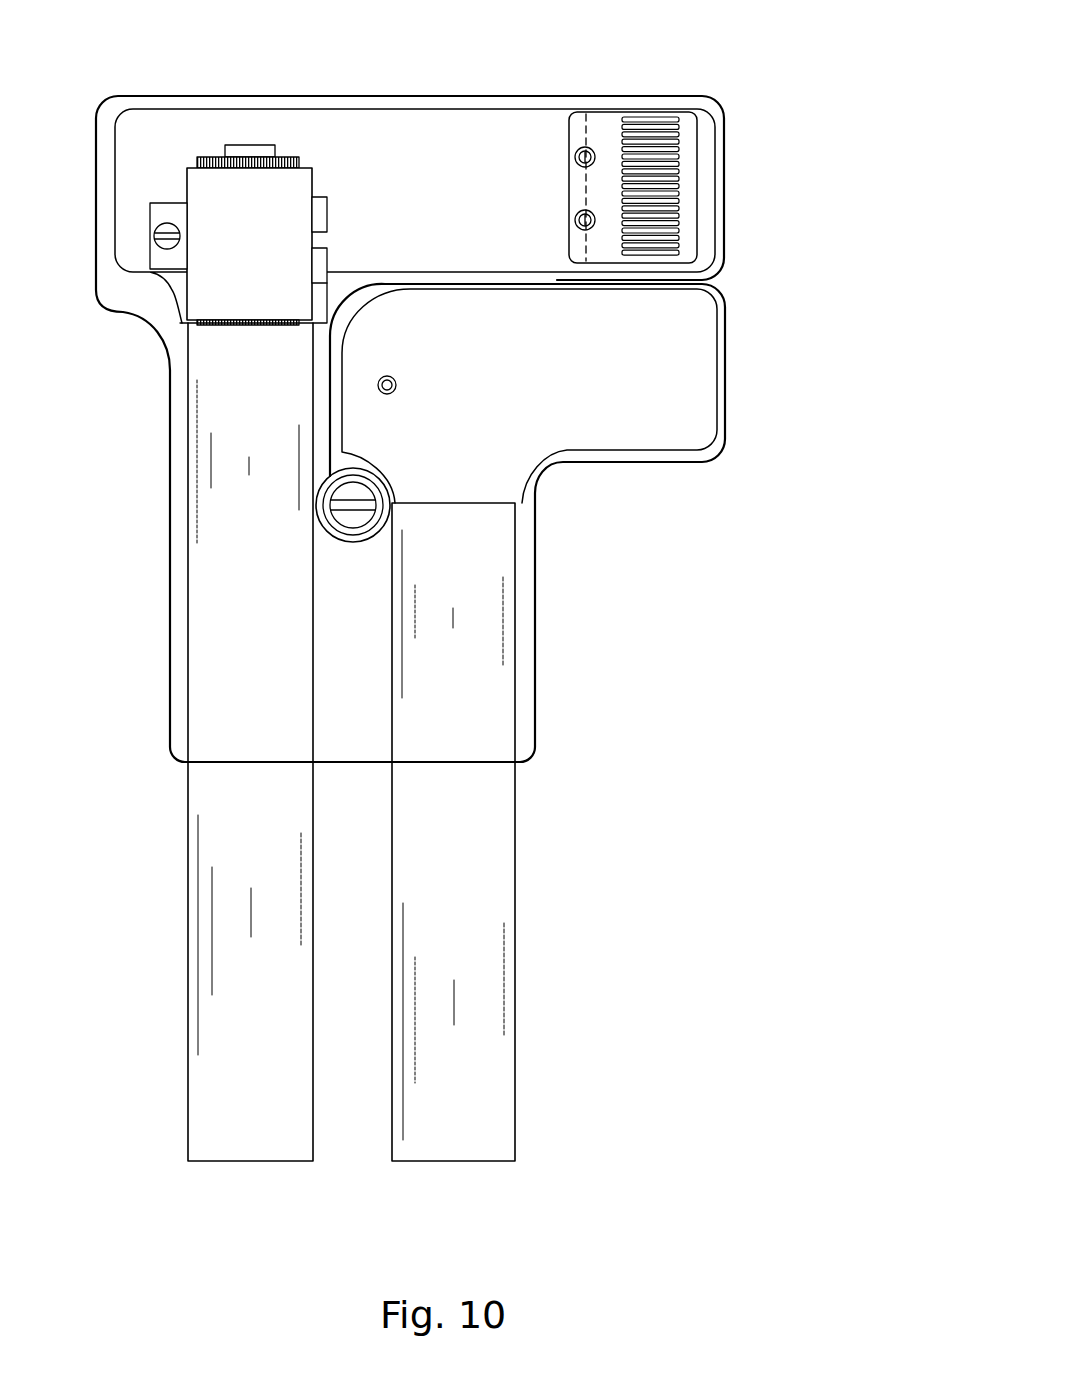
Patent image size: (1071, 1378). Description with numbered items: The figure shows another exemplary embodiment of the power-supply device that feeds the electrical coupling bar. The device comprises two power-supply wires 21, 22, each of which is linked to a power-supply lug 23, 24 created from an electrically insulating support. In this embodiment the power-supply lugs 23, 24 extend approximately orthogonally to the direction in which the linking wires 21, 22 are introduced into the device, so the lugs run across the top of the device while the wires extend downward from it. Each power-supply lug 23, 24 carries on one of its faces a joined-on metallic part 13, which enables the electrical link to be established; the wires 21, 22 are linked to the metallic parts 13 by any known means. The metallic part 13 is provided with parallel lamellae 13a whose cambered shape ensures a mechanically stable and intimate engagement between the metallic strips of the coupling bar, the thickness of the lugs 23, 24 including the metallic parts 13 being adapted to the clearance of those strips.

The metallic part 13 is at (698, 163).
The parallel lamellae 13a is at (677, 138).
The power-supply wire 21 is at (191, 945).
The power-supply wire 22 is at (515, 865).
The power-supply lug 23 is at (720, 462).
The power-supply lug 24 is at (728, 233).